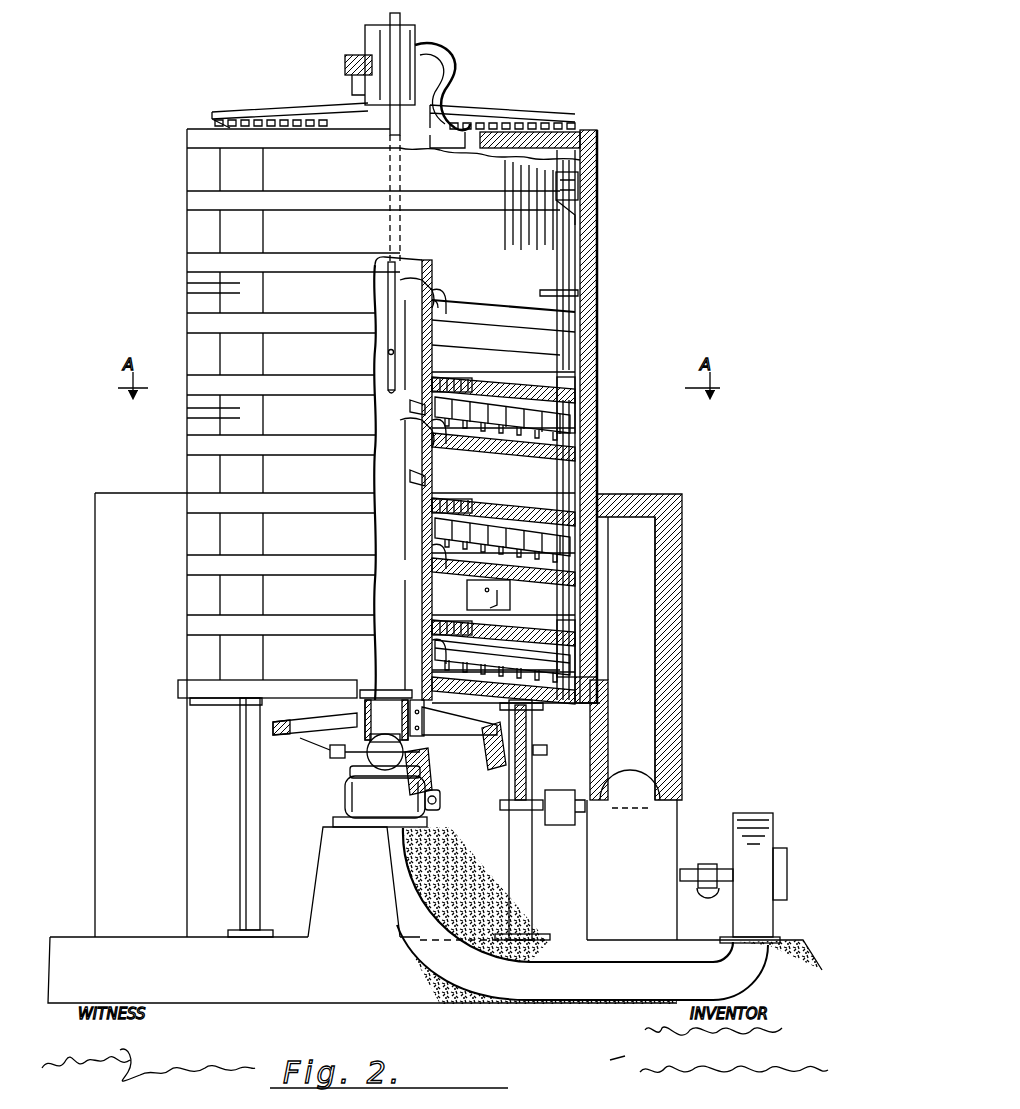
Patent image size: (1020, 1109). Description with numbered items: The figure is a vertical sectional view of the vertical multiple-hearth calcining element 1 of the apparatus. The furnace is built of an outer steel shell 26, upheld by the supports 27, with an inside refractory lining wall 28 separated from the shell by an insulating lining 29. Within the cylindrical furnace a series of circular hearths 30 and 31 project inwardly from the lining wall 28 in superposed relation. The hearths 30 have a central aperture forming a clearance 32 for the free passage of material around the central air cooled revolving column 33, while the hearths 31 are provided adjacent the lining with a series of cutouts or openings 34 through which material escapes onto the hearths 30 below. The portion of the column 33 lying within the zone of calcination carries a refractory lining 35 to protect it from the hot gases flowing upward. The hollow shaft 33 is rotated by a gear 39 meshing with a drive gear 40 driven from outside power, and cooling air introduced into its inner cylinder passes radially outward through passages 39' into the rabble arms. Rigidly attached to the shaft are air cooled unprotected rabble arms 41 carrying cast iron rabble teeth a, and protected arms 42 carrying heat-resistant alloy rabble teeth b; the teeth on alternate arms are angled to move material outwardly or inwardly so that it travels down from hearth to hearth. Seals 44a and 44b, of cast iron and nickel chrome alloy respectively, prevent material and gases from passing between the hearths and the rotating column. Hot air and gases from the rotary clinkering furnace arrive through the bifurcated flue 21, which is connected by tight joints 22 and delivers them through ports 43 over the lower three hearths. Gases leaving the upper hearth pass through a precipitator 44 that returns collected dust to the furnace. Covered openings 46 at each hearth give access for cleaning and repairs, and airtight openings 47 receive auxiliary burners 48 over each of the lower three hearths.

The vertical element 1 is at (376, 520).
The bifurcated flue 21 is at (95, 758).
The tight joints 22 is at (608, 494).
The outer steel shell 26 is at (598, 292).
The supports 27 is at (255, 836).
The refractory lining wall 28 is at (540, 352).
The insulating lining 29 is at (600, 405).
The hearths 30 is at (598, 372).
The hearths 31 is at (478, 452).
The clearance 32 is at (438, 380).
The central air cooled revolving column 33 is at (345, 748).
The cutouts or openings 34 is at (616, 452).
The refractory lining 35 is at (423, 478).
The gear 39 is at (458, 735).
The passages 39' is at (371, 381).
The drive gear 40 is at (492, 767).
The air cooled unprotected rabble arms 41 is at (565, 180).
The protected arms 42 is at (598, 419).
The ports 43 is at (660, 494).
The precipitator 44 is at (402, 692).
The seal 44a is at (395, 285).
The seal 44b is at (418, 435).
The openings 46 is at (245, 290).
The airtight openings 47 is at (498, 604).
The burners 48 is at (482, 592).
The rabble teeth a is at (598, 307).
The rabble teeth b is at (580, 675).